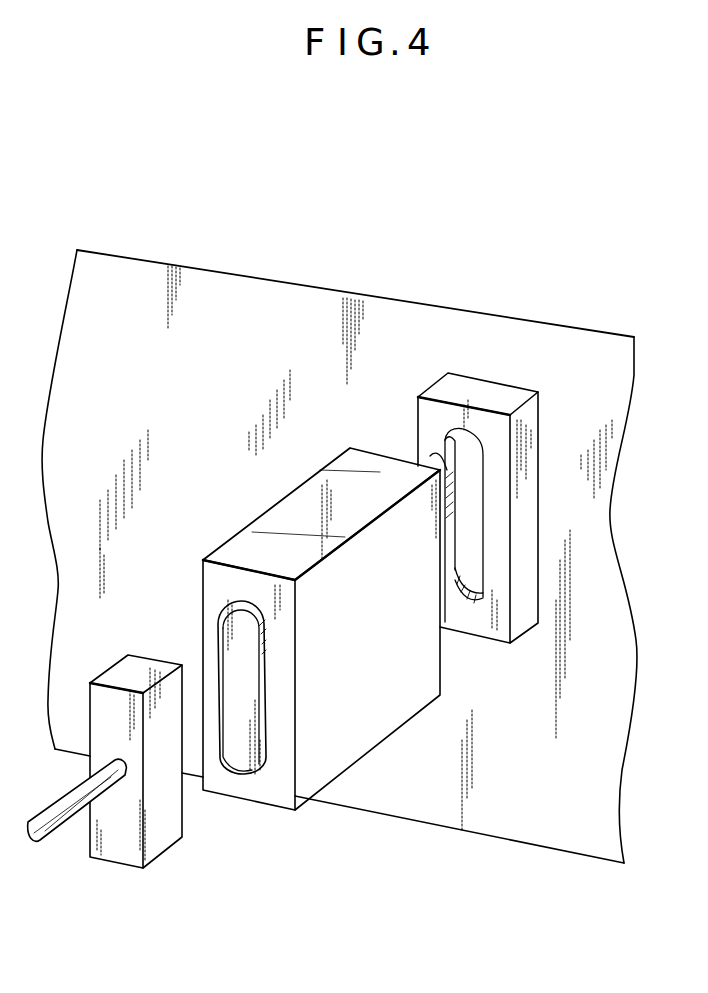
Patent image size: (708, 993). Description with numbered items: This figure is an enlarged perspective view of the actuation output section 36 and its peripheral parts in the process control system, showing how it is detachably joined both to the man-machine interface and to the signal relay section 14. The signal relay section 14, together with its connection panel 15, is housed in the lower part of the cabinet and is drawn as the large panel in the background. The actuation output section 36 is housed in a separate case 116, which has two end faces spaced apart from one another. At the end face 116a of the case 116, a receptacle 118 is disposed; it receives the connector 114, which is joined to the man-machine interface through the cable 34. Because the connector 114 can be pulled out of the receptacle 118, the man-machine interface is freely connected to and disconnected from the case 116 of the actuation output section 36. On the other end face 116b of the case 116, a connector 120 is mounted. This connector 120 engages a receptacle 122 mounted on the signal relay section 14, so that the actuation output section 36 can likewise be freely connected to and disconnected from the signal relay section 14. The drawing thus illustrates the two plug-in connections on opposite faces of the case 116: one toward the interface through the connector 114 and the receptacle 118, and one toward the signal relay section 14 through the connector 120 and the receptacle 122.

The signal relay section 14 is at (429, 296).
The connection panel 15 is at (527, 323).
The cable 34 is at (47, 838).
The actuation output section 36 is at (400, 708).
The connector 114 is at (165, 835).
The case 116 is at (285, 631).
The end face 116a is at (222, 575).
The other end face 116b is at (372, 455).
The receptacle 118 is at (237, 764).
The connector 120 is at (452, 617).
The receptacle 122 is at (478, 518).